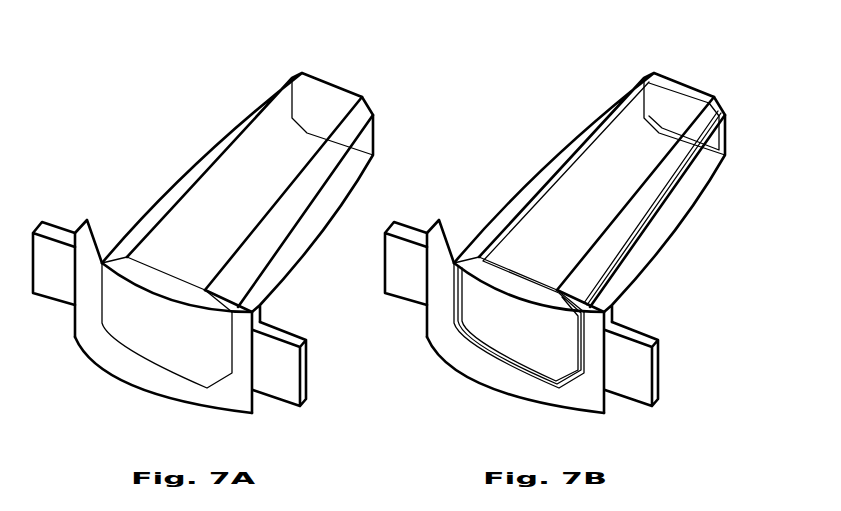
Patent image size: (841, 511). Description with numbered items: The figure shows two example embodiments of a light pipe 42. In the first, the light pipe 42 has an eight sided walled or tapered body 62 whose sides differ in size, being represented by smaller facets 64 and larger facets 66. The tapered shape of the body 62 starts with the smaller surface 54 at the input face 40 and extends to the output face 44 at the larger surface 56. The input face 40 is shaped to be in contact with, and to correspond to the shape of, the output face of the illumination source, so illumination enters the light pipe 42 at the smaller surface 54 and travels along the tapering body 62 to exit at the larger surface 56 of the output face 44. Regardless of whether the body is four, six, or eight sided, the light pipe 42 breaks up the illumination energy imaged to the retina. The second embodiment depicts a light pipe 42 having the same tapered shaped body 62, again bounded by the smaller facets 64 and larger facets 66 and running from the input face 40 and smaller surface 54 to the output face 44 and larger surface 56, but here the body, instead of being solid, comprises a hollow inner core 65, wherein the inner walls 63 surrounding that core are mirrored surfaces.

In FIG. 7A, the input face 40 is at (373, 131).
In FIG. 7B, the input face 40 is at (683, 209).
In FIG. 7A, the light pipe 42 is at (228, 100).
In FIG. 7B, the light pipe 42 is at (573, 241).
In FIG. 7A, the output face 44 is at (148, 262).
In FIG. 7B, the output face 44 is at (515, 286).
In FIG. 7A, the smaller surface 54 is at (317, 95).
In FIG. 7B, the smaller surface 54 is at (684, 95).
In FIG. 7A, the larger surface 56 is at (157, 322).
In FIG. 7B, the larger surface 56 is at (502, 327).
In FIG. 7A, the tapered body 62 is at (237, 190).
In FIG. 7B, the tapered body 62 is at (589, 190).
In FIG. 7B, the inner walls 63 is at (657, 208).
In FIG. 7A, the smaller facets 64 is at (117, 260).
In FIG. 7B, the smaller facets 64 is at (541, 309).
In FIG. 7B, the hollow inner core 65 is at (607, 250).
In FIG. 7A, the larger facets 66 is at (177, 277).
In FIG. 7B, the larger facets 66 is at (540, 316).